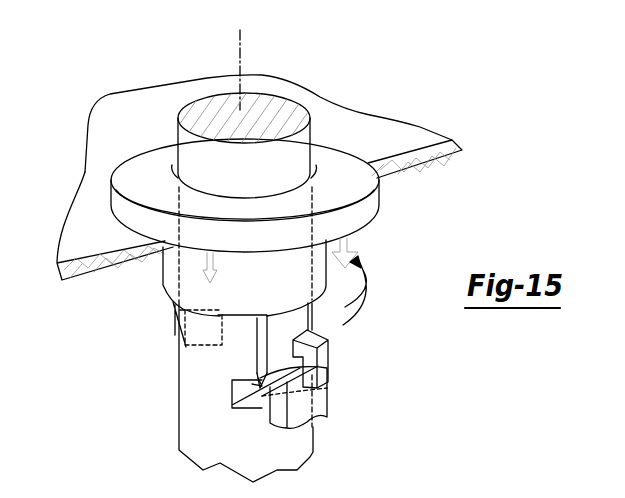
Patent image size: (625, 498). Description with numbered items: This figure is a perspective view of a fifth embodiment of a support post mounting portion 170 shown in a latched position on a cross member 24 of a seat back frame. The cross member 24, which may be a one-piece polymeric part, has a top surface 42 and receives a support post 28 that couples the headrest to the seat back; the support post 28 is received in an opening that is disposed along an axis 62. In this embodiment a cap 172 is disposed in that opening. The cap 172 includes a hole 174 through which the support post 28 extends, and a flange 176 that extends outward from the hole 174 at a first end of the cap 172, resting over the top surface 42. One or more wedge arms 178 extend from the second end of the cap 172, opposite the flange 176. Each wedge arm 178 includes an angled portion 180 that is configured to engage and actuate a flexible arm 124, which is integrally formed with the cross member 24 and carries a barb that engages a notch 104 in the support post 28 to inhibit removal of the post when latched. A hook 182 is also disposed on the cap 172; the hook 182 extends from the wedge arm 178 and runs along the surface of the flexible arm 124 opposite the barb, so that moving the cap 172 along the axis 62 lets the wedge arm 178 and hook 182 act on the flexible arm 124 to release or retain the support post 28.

The cross member 24 is at (378, 104).
The support post 28 is at (253, 176).
The top surface 42 is at (90, 192).
The axis 62 is at (240, 50).
The notch 104 is at (240, 397).
The flexible arm 124 is at (323, 407).
The support post mounting portion 170 is at (132, 78).
The cap 172 is at (152, 138).
The hole 174 is at (313, 166).
The flange 176 is at (162, 176).
The wedge arm 178 is at (173, 306).
The angled portion 180 is at (233, 385).
The hook 182 is at (325, 348).